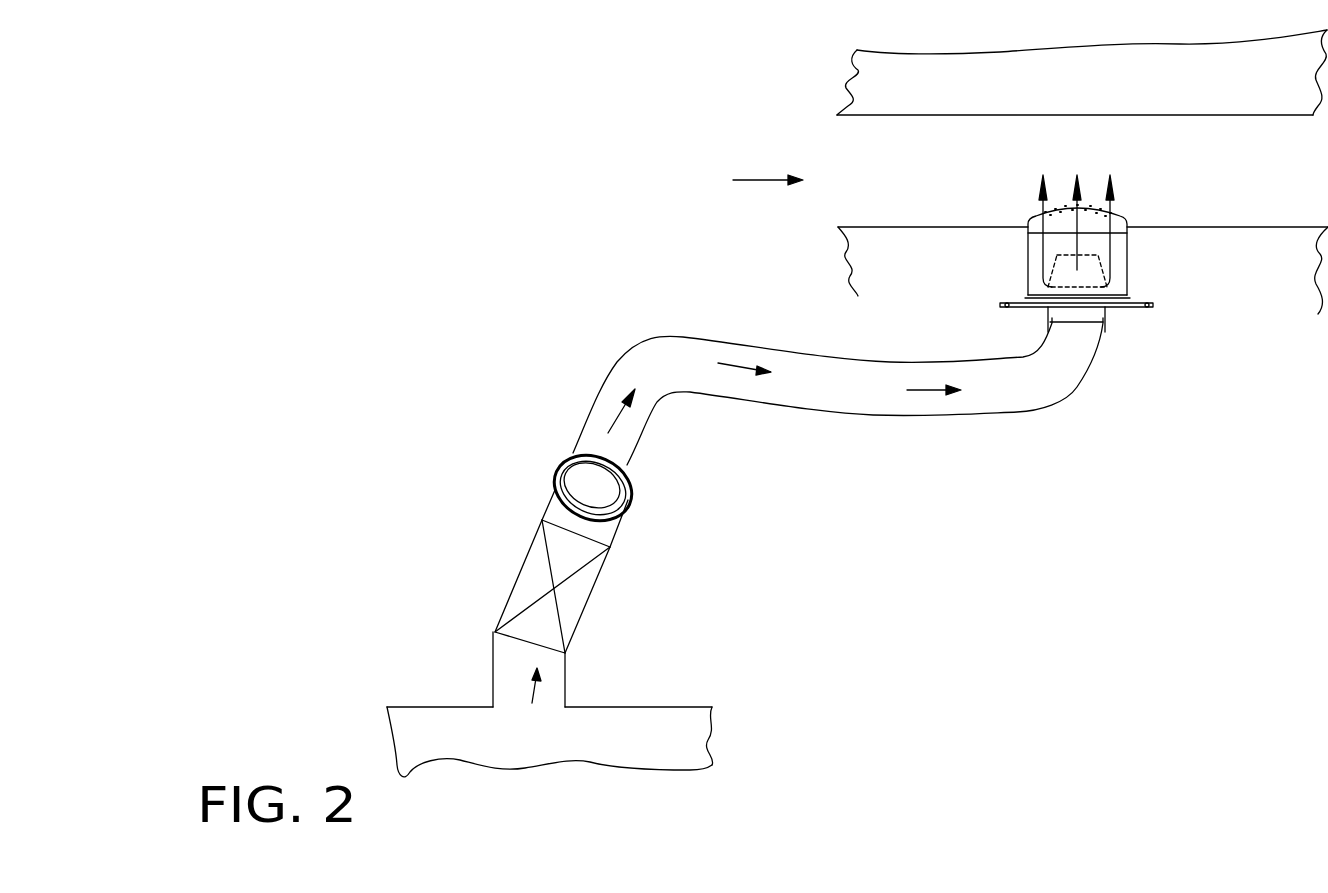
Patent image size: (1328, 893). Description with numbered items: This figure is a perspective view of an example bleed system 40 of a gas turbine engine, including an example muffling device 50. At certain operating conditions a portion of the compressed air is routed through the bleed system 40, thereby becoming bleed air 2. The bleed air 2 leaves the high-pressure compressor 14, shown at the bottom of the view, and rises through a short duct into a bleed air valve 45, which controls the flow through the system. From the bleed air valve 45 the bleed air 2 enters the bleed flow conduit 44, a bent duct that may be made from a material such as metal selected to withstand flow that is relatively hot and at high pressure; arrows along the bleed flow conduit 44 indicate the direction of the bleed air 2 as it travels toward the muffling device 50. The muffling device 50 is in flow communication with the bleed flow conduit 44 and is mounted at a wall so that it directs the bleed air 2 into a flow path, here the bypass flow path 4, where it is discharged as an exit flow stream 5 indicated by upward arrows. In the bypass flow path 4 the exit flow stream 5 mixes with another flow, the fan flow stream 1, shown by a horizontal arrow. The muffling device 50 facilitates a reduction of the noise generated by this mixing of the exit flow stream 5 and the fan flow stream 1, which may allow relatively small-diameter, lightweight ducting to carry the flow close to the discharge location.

The fan flow stream 1 is at (757, 180).
The bleed air 2 is at (497, 737).
The bypass flow path 4 is at (1007, 172).
The exit flow stream 5 is at (1078, 262).
The high-pressure compressor 14 is at (628, 715).
The bleed system 40 is at (522, 254).
The bleed flow conduit 44 is at (917, 415).
The bleed air valve 45 is at (527, 573).
The muffling device 50 is at (1020, 272).